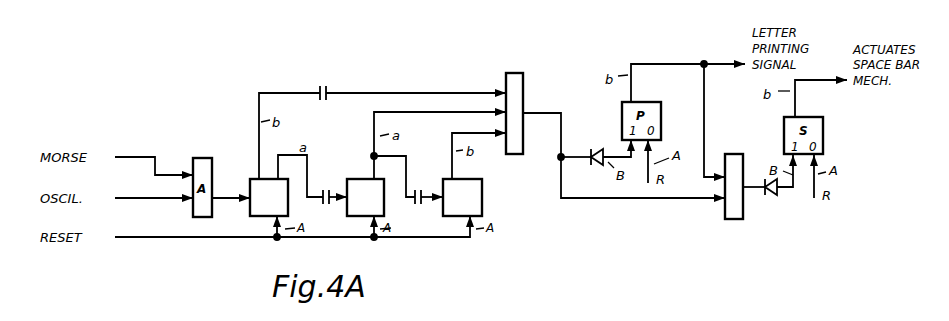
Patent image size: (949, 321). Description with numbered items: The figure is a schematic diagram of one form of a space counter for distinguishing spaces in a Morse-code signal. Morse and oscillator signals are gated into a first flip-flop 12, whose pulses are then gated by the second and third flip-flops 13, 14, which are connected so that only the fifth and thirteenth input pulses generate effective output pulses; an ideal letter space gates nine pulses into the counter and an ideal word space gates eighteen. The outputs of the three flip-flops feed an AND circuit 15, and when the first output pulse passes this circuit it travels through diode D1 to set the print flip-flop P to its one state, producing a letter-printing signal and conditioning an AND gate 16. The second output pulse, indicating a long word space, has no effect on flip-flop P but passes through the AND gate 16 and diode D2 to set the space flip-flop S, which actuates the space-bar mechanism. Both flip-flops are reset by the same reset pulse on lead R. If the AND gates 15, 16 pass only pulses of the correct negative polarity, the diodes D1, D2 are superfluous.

The first flip-flop 12 is at (252, 180).
The second flip-flop 13 is at (357, 180).
The third flip-flop 14 is at (449, 180).
The AND circuit 15 is at (519, 150).
The AND gate 16 is at (737, 214).
The diode D1 is at (598, 167).
The diode D2 is at (778, 196).